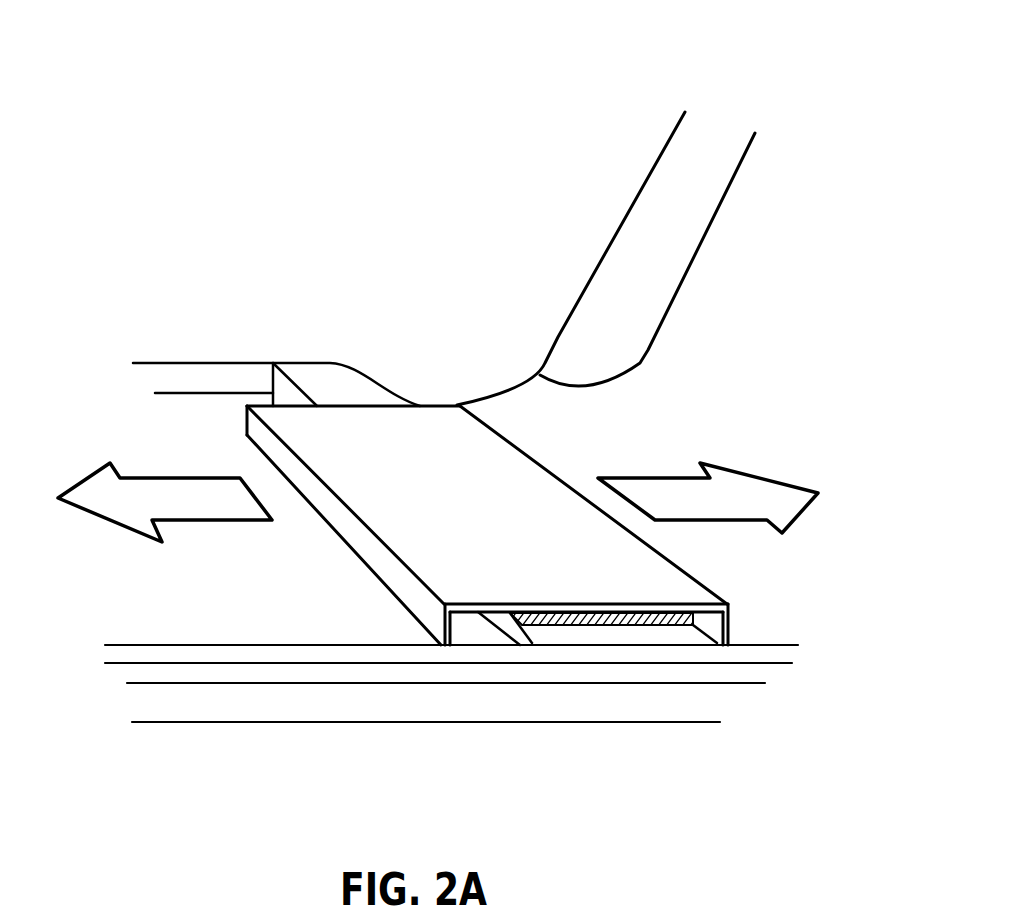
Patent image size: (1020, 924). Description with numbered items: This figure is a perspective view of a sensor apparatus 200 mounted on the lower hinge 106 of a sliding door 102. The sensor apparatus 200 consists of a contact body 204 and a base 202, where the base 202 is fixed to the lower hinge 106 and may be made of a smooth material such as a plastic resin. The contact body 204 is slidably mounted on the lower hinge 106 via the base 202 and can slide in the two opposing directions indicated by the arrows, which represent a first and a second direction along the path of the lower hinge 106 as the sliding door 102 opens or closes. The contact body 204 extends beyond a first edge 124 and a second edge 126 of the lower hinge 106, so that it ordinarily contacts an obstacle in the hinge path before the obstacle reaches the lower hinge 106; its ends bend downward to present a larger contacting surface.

The sliding door 102 is at (748, 112).
The lower hinge 106 is at (270, 388).
The sensor apparatus 200 is at (630, 458).
The contact body 204 is at (695, 577).
The base 202 is at (556, 626).
The first edge 124 is at (512, 612).
The second edge 126 is at (720, 642).